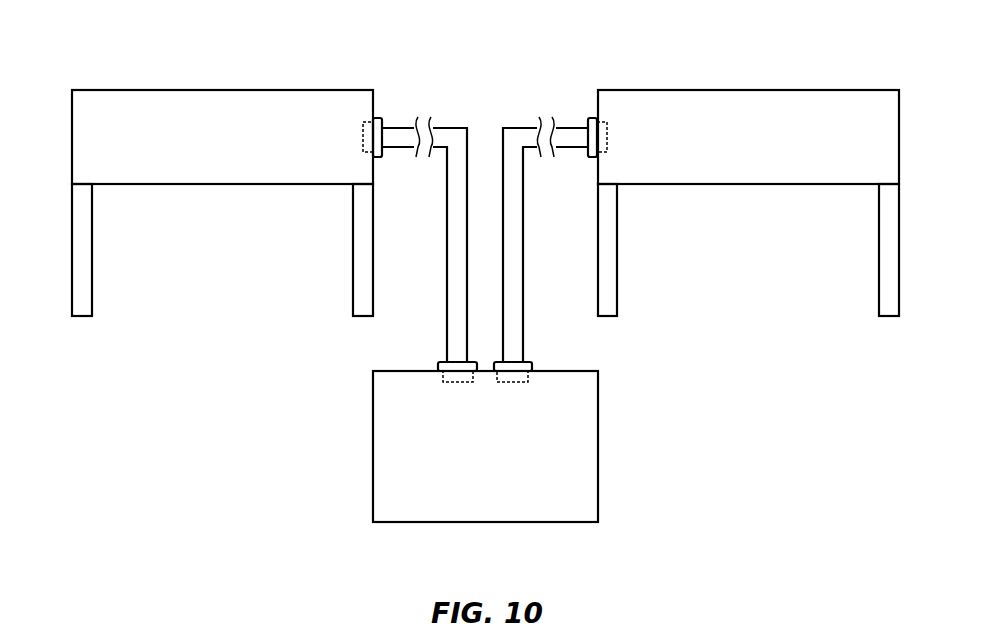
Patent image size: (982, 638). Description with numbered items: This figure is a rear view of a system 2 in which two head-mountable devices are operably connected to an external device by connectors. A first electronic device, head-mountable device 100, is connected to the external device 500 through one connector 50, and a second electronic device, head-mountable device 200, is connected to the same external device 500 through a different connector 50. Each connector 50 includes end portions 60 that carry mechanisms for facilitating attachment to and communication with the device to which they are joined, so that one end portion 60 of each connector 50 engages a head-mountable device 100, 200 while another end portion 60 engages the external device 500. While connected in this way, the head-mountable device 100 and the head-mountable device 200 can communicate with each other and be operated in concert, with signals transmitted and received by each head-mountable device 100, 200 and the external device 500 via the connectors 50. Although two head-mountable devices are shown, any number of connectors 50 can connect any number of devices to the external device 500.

The system 2 is at (28, 92).
The head-mountable device 100 is at (218, 90).
The head-mountable device 200 is at (748, 90).
The external device 500 is at (373, 395).
The connector 50 is at (452, 128).
The end portion 60 is at (378, 118).